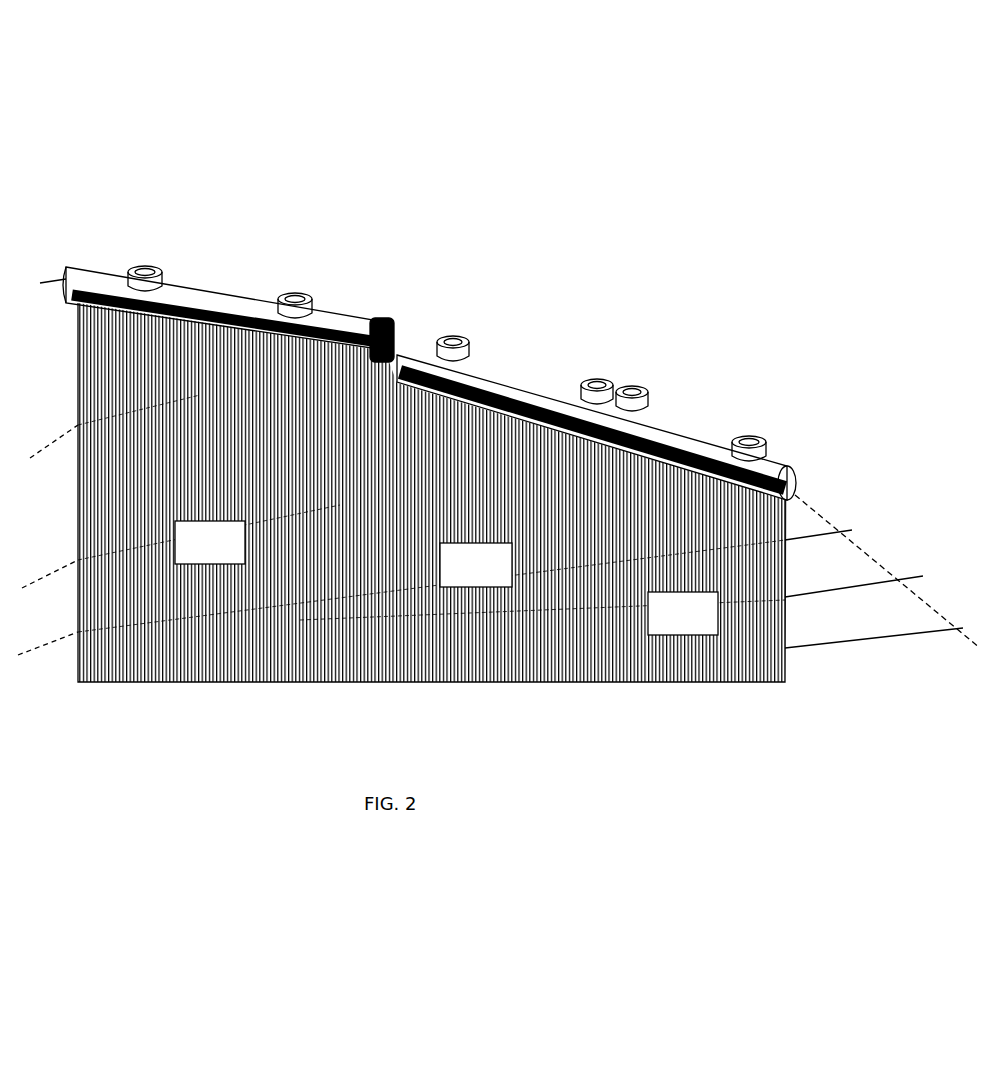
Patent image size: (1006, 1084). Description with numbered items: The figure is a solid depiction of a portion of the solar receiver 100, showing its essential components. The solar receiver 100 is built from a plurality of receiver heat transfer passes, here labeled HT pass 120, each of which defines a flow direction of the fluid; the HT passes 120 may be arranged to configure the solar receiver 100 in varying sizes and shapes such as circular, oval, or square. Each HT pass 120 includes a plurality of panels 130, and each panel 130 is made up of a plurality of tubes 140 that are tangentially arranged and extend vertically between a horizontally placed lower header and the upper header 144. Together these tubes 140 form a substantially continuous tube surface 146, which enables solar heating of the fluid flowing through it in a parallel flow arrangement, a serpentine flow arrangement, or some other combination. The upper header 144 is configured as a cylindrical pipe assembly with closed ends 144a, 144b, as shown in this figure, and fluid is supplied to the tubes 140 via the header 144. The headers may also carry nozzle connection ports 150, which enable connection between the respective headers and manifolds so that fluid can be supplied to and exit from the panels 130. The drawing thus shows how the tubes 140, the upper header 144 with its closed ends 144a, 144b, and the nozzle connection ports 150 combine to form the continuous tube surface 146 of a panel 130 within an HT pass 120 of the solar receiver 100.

The solar receiver 100 is at (622, 195).
The receiver heat transfer pass 120 is at (400, 195).
The panel 130 is at (792, 666).
The tube 140 is at (687, 668).
The upper header 144 is at (214, 286).
The closed end 144a is at (68, 268).
The closed end 144b is at (384, 328).
The continuous tube surface 146 is at (446, 578).
The nozzle connection port 150 is at (769, 431).